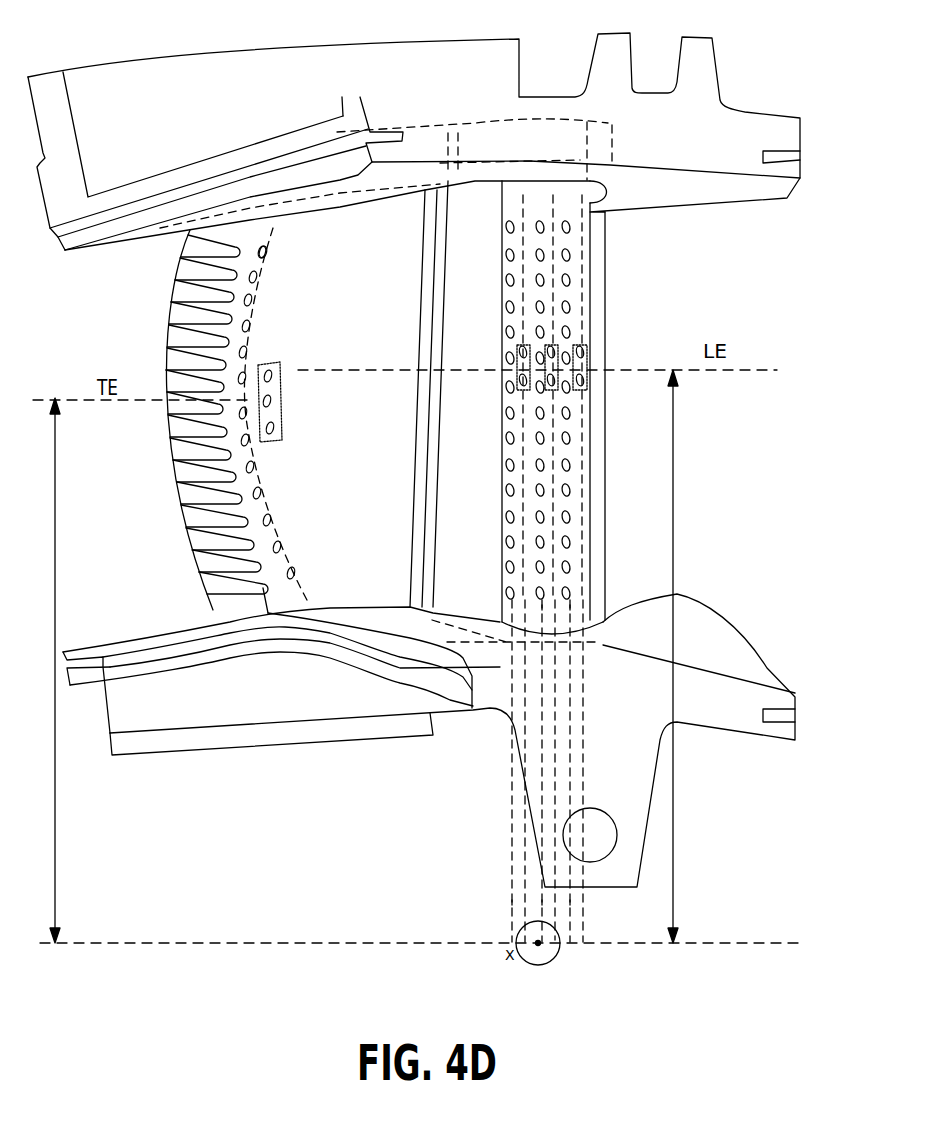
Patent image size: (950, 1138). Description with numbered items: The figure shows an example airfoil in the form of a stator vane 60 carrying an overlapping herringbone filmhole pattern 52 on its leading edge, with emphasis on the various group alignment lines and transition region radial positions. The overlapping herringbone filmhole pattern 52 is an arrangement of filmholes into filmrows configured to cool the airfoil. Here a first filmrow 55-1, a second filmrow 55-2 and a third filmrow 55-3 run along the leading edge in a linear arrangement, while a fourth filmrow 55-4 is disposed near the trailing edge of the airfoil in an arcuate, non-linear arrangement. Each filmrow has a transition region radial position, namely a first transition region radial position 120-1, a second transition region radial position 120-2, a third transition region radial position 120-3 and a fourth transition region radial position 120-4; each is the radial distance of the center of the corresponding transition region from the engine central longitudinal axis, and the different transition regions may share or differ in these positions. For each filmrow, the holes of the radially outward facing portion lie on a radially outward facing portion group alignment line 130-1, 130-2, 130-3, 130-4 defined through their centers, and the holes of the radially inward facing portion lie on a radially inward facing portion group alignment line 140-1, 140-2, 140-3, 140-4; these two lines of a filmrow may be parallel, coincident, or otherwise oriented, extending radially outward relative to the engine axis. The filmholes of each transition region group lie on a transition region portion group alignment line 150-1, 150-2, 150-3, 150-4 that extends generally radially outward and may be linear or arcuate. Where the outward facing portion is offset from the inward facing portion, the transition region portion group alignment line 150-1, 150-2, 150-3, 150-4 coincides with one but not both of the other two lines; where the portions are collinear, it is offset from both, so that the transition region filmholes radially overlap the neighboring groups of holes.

The stator vane 60 is at (433, 110).
The overlapping herringbone filmhole pattern 52 is at (400, 398).
The first filmrow 55-1 is at (517, 611).
The second filmrow 55-2 is at (533, 611).
The third filmrow 55-3 is at (560, 610).
The fourth filmrow 55-4 is at (280, 583).
The first transition region radial position 120-1 is at (649, 657).
The second transition region radial position 120-2 is at (649, 657).
The third transition region radial position 120-3 is at (697, 372).
The fourth transition region radial position 120-4 is at (117, 402).
The radially outward facing portion group alignment line 130-1 is at (429, 740).
The radially outward facing portion group alignment line 130-2 is at (435, 697).
The radially outward facing portion group alignment line 130-3 is at (425, 708).
The radially outward facing portion group alignment line 130-4 is at (258, 262).
The radially inward facing portion group alignment line 140-1 is at (510, 742).
The radially inward facing portion group alignment line 140-2 is at (573, 764).
The radially inward facing portion group alignment line 140-3 is at (522, 770).
The radially inward facing portion group alignment line 140-4 is at (147, 270).
The transition region portion group alignment line 150-1 is at (523, 837).
The transition region portion group alignment line 150-2 is at (555, 853).
The transition region portion group alignment line 150-3 is at (583, 860).
The transition region portion group alignment line 150-4 is at (272, 353).